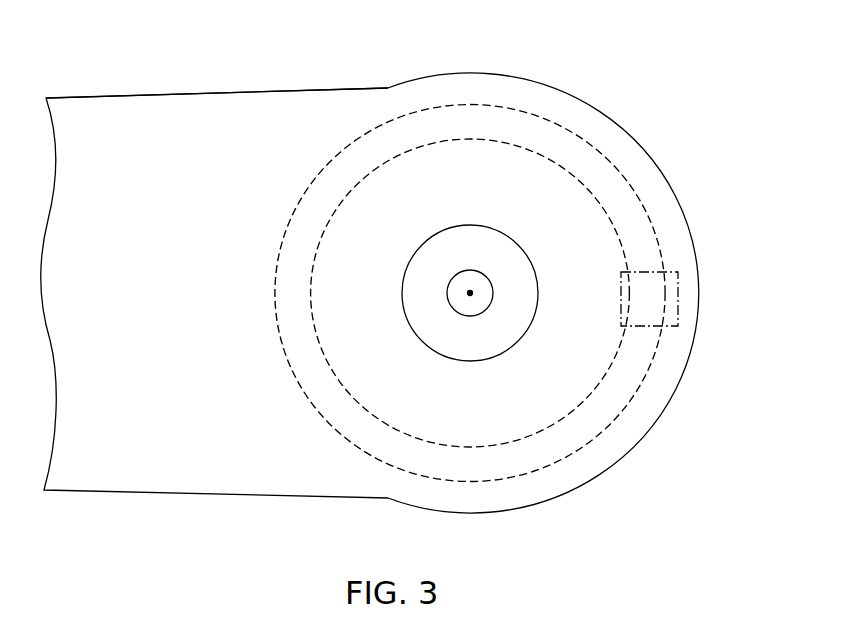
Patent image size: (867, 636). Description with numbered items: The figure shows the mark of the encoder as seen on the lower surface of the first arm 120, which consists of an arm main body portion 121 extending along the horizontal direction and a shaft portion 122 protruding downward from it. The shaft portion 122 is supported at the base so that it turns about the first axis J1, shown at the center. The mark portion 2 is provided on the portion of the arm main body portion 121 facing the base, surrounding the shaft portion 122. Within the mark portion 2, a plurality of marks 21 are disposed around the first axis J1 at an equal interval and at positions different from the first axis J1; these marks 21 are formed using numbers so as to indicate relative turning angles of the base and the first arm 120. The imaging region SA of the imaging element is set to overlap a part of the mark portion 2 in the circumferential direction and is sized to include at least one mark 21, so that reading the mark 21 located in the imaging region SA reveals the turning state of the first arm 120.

The mark portion 2 is at (573, 109).
The marks 21 is at (480, 116).
The first arm 120 is at (175, 93).
The arm main body portion 121 is at (242, 92).
The shaft portion 122 is at (498, 355).
The first axis J1 is at (470, 292).
The imaging region SA is at (678, 283).